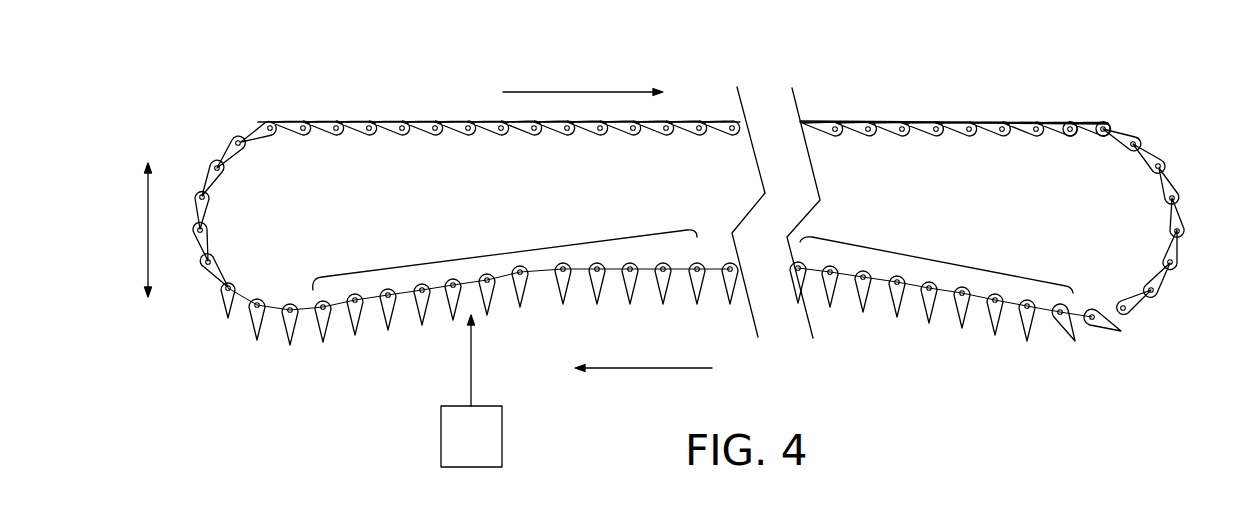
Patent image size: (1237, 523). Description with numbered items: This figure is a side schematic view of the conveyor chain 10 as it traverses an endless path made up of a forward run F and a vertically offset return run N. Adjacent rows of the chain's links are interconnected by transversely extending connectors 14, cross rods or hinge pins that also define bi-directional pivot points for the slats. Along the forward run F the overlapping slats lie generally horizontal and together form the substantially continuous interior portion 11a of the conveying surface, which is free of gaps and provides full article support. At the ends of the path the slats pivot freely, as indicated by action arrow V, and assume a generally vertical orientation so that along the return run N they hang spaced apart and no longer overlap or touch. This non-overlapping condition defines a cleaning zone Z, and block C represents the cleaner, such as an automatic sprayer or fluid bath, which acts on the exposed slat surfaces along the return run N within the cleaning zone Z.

The conveyor chain 10 is at (958, 107).
The interior portion of the conveying surface 11a is at (855, 102).
The connector 14 is at (1097, 122).
The forward run F is at (582, 92).
The action arrow V is at (148, 236).
The return run N is at (647, 368).
The cleaner block C is at (471, 391).
The cleaning zone Z is at (693, 260).